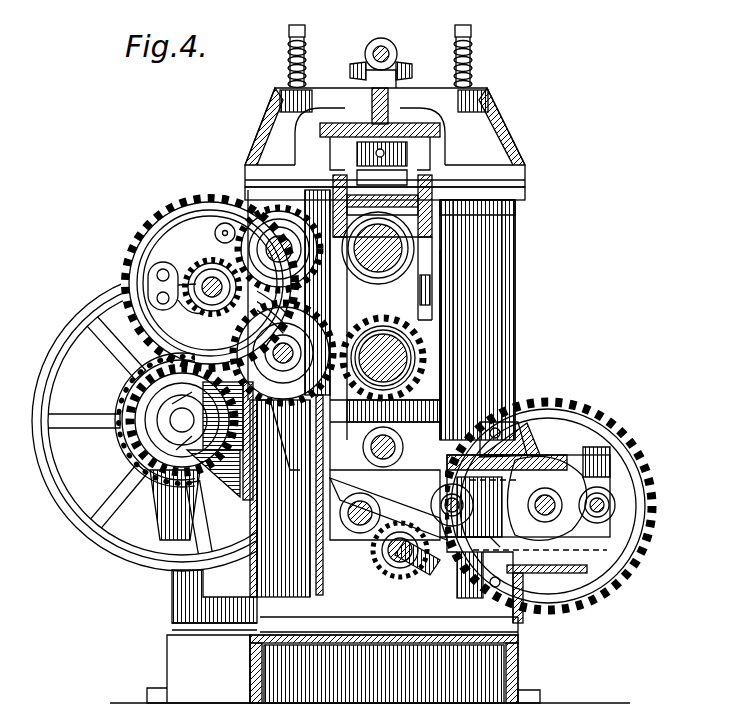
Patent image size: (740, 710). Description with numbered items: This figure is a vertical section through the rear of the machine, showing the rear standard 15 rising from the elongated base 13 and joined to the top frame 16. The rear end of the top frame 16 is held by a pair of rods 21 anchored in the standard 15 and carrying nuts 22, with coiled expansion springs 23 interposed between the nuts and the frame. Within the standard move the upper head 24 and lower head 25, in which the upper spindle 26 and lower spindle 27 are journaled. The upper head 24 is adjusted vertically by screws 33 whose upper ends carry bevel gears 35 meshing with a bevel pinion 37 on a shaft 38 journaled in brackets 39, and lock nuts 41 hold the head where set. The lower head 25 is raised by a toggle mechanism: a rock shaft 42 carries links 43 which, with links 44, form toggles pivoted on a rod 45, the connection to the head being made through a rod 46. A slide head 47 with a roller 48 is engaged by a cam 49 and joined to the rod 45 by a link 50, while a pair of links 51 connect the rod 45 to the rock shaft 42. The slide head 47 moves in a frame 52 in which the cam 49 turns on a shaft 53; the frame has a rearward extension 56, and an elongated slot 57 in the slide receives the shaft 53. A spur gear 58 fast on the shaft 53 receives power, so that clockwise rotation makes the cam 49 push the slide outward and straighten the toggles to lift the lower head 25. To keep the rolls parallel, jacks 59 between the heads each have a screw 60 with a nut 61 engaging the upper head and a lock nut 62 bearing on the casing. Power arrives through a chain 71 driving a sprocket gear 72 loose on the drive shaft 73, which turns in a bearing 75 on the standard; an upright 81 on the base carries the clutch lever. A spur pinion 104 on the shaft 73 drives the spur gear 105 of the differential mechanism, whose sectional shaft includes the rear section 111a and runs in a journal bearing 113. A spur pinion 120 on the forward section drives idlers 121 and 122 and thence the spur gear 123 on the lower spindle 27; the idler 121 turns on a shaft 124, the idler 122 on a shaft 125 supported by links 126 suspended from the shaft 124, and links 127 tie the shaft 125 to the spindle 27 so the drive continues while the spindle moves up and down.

The base 13 is at (410, 634).
The upright standard 15 is at (515, 172).
The top frame 16 is at (495, 112).
The rods 21 is at (288, 60).
The nuts 22 is at (289, 30).
The coiled expansion springs 23 is at (306, 55).
The upper head 24 is at (440, 187).
The lower head 25 is at (432, 432).
The upper spindle 26 is at (445, 270).
The lower spindle 27 is at (445, 340).
The screws 33 is at (410, 172).
The bevel gears 35 is at (410, 74).
The bevel pinion 37 is at (383, 40).
The shaft 38 is at (390, 52).
The brackets 39 is at (358, 70).
The lock nuts 41 is at (365, 158).
The rock shaft 42 is at (400, 568).
The links 43 is at (355, 532).
The links 44 is at (398, 458).
The rod 45 is at (348, 513).
The rod 46 is at (345, 480).
The slide head 47 is at (478, 432).
The roller 48 is at (612, 470).
The cam 49 is at (540, 440).
The link 50 is at (388, 556).
The links 51 is at (335, 565).
The frame 52 is at (582, 460).
The shaft 53 is at (565, 560).
The rearward extension 56 is at (562, 605).
The elongated slot 57 is at (635, 543).
The spur gear 58 is at (655, 505).
The jacks 59 is at (440, 300).
The screw 60 is at (440, 262).
The nut 61 is at (437, 242).
The lock nut 62 is at (445, 300).
The chain 71 is at (170, 496).
The sprocket gear 72 is at (130, 445).
The drive shaft 73 is at (170, 412).
The bearing 75 is at (170, 470).
The upright 81 is at (190, 603).
The spur pinion 104 is at (150, 452).
The spur gear 105 is at (130, 245).
The shaft section 111a is at (168, 290).
The journal bearing 113 is at (115, 318).
The spur pinion 120 is at (200, 280).
The idler 121 is at (250, 215).
The idler 122 is at (287, 403).
The spur gear 123 is at (420, 358).
The shaft 124 is at (278, 240).
The shaft 125 is at (275, 350).
The links 126 is at (172, 210).
The links 127 is at (302, 446).